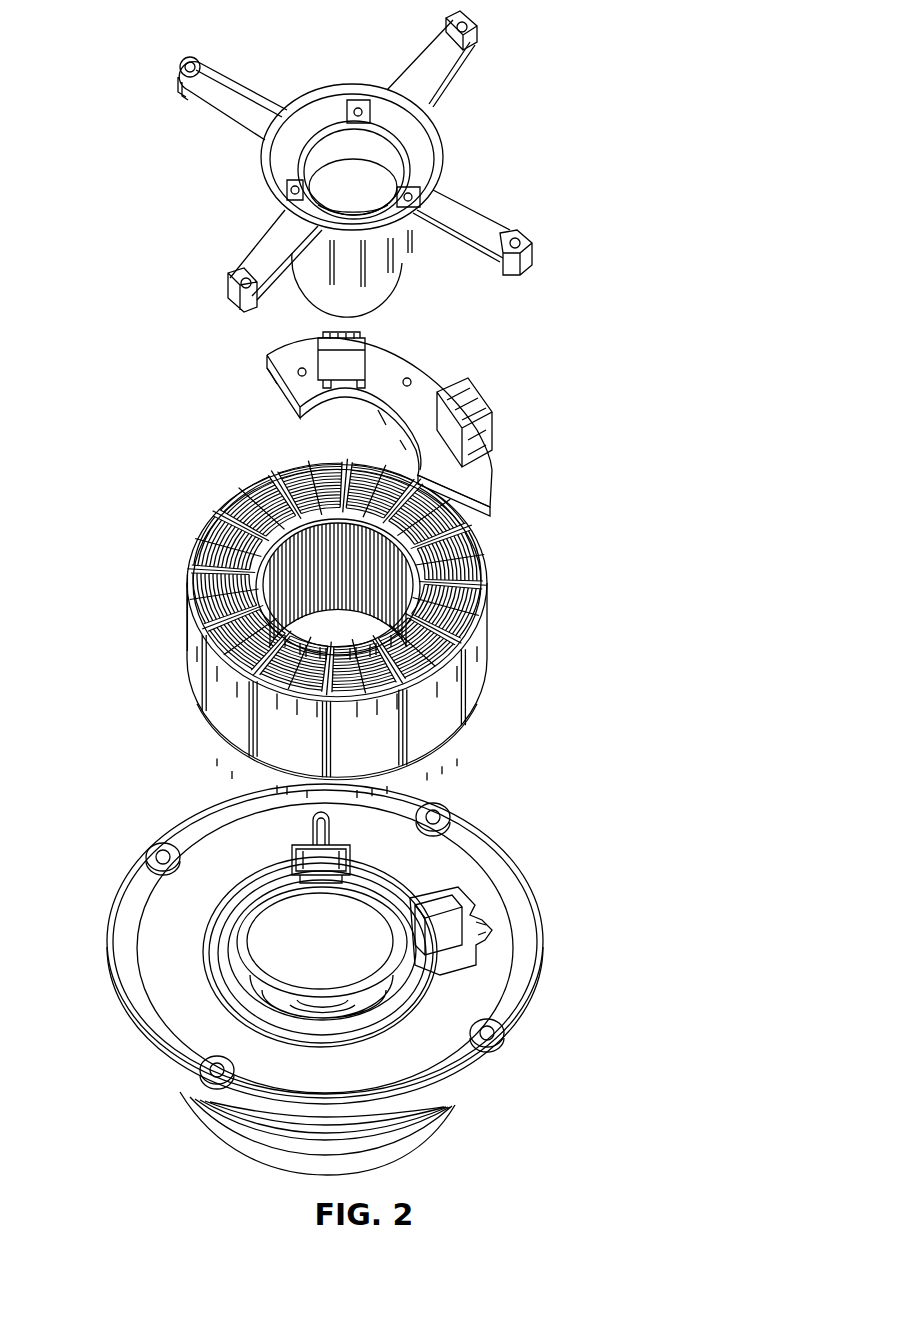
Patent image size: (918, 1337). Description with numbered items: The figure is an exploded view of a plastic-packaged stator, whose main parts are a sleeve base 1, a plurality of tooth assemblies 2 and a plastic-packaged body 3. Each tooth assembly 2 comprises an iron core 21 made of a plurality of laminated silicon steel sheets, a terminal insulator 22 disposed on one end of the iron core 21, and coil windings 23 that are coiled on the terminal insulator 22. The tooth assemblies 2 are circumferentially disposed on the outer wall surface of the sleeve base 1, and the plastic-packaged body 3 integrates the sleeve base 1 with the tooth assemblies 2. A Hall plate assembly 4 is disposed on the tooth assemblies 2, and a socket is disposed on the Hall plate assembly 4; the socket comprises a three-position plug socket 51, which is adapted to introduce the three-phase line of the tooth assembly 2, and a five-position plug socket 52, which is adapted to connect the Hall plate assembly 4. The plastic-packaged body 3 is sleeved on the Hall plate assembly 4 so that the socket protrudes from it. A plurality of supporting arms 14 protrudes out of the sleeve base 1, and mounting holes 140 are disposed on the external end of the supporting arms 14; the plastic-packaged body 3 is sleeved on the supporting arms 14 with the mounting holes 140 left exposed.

The sleeve base 1 is at (602, 965).
The supporting arms 14 is at (240, 105).
The mounting holes 140 is at (188, 62).
The Hall plate assembly 4 is at (412, 375).
The three-position plug socket 51 is at (477, 410).
The five-position plug socket 52 is at (327, 358).
The tooth assemblies 2 is at (508, 589).
The iron core 21 is at (225, 698).
The terminal insulator 22 is at (190, 612).
The coil windings 23 is at (200, 545).
The plastic-packaged body 3 is at (170, 935).